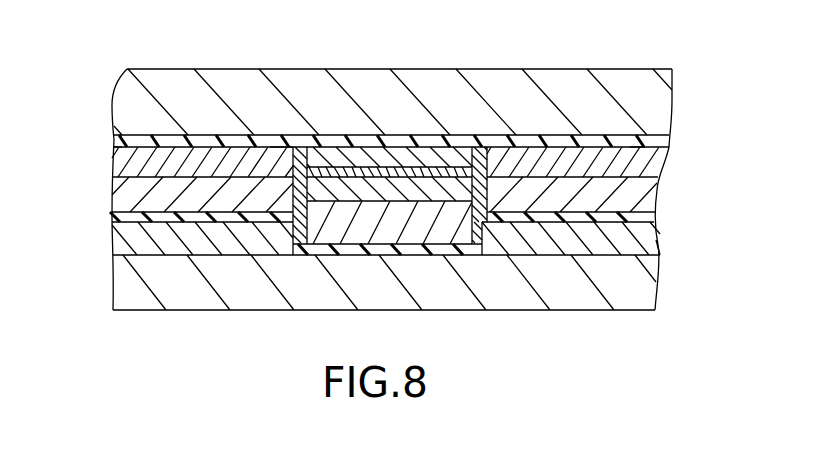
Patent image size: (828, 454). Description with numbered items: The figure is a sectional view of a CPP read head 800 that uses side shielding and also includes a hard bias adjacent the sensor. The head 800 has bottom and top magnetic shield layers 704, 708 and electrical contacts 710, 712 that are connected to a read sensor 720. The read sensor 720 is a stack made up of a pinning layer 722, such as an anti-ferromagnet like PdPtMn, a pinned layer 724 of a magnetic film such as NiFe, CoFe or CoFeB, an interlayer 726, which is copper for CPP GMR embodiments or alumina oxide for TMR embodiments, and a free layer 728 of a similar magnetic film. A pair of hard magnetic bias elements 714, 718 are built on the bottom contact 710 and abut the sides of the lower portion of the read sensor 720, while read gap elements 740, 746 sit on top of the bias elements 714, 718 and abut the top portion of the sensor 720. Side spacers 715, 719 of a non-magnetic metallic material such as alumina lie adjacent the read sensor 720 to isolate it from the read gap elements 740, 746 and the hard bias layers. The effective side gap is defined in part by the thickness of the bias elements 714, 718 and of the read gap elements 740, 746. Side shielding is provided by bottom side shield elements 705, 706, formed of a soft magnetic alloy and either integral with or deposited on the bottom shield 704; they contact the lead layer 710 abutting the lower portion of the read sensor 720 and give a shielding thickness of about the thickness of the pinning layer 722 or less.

The CPP read head 800 is at (107, 55).
The bottom magnetic shield layer 704 is at (652, 287).
The bottom side shield element 705 is at (650, 240).
The bottom side shield element 706 is at (137, 235).
The top magnetic shield layer 708 is at (660, 90).
The bottom electrical contact 710 is at (647, 217).
The top electrical contact 712 is at (669, 139).
The hard magnetic bias element 714 is at (645, 192).
The side spacer 715 is at (500, 150).
The hard magnetic bias element 718 is at (130, 200).
The side spacer 719 is at (275, 140).
The read sensor 720 is at (311, 258).
The pinning layer 722 is at (410, 232).
The pinned layer 724 is at (437, 193).
The interlayer 726 is at (417, 172).
The free layer 728 is at (442, 148).
The read gap element 740 is at (637, 157).
The read gap element 746 is at (118, 144).